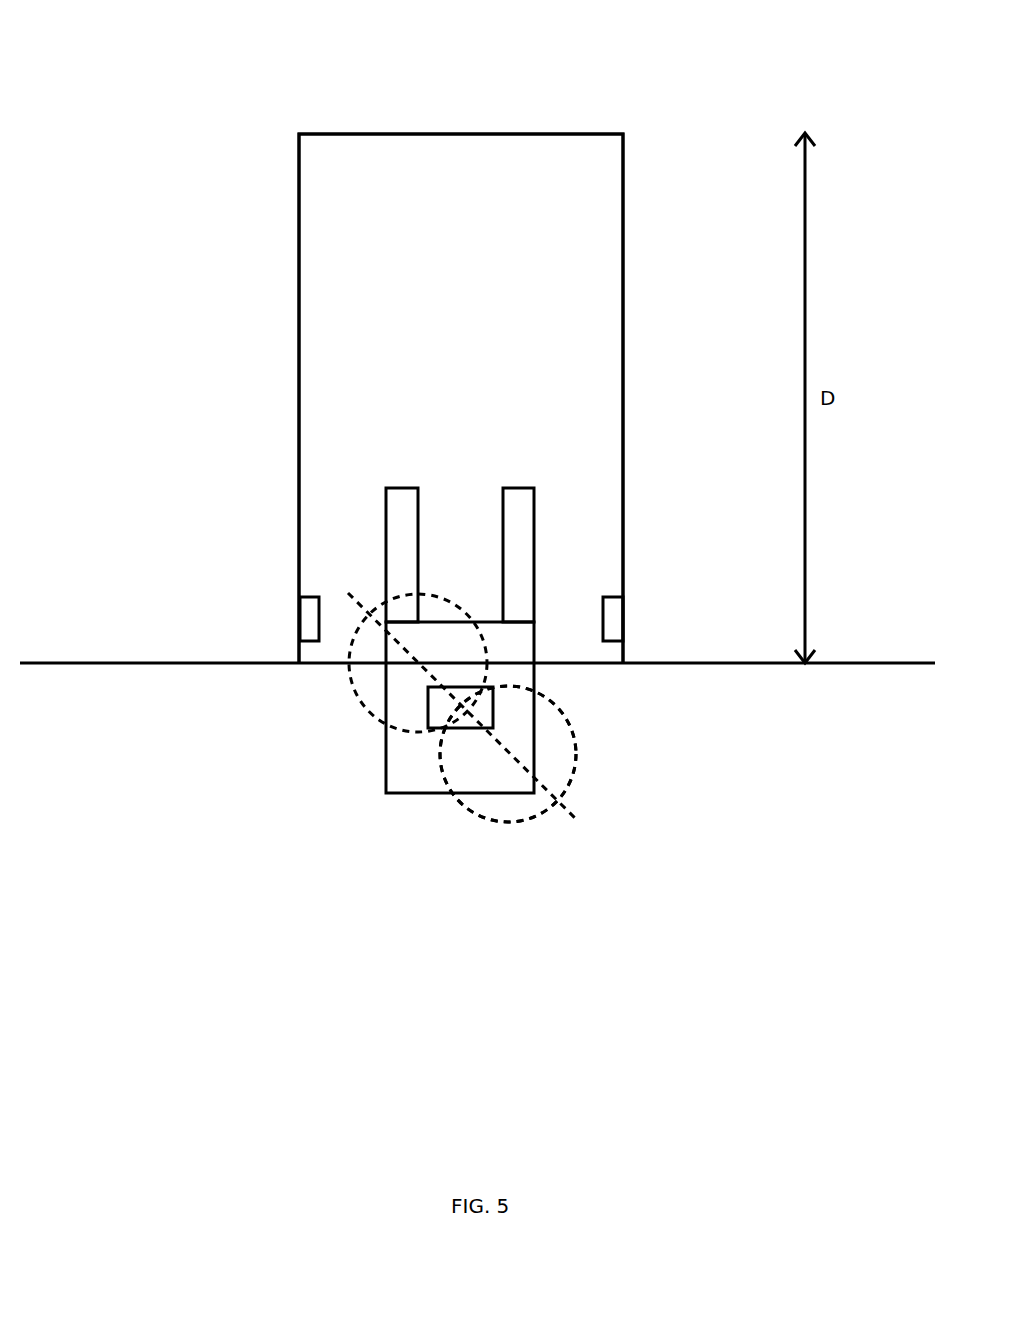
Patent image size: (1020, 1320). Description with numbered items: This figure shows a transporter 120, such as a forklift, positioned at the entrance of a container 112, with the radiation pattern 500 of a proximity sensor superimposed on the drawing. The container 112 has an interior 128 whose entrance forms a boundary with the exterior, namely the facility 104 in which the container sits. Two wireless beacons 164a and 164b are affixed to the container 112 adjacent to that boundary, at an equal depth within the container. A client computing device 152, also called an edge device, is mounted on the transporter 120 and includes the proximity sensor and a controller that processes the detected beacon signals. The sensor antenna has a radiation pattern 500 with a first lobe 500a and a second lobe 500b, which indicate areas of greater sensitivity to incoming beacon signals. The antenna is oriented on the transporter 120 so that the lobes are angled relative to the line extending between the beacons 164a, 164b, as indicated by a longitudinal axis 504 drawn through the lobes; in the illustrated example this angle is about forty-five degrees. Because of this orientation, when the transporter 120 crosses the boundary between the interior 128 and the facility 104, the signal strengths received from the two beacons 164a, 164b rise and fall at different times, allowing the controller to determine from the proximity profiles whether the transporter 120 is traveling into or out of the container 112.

The facility 104 is at (77, 910).
The container 112 is at (332, 126).
The transporter 120 is at (408, 793).
The interior 128 is at (452, 249).
The client computing device 152 is at (479, 718).
The wireless beacon 164a is at (625, 620).
The wireless beacon 164b is at (298, 619).
The radiation pattern 500 is at (592, 748).
The first lobe 500a is at (503, 822).
The second lobe 500b is at (355, 693).
The longitudinal axis 504 is at (575, 818).